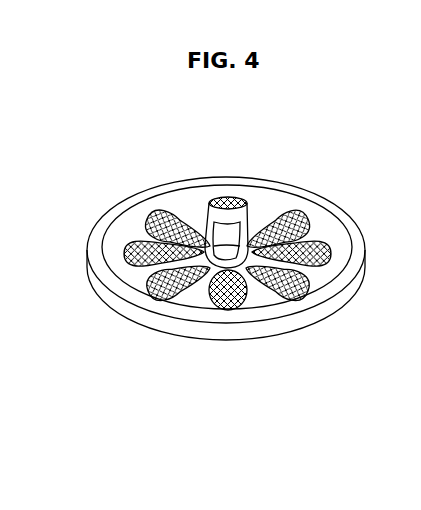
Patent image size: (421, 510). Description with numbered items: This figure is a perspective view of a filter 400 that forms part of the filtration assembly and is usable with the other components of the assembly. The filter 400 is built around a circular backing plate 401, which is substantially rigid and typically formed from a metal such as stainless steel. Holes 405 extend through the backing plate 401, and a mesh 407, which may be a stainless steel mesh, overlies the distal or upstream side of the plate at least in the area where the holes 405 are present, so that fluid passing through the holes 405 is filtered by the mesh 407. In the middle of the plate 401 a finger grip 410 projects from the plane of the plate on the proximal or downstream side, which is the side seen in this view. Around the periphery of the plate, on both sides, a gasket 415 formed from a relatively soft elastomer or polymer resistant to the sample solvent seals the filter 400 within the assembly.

The filter 400 is at (210, 273).
The circular backing plate 401 is at (234, 225).
The holes 405 is at (182, 217).
The mesh 407 is at (277, 215).
The finger grip 410 is at (225, 232).
The gasket 415 is at (142, 192).